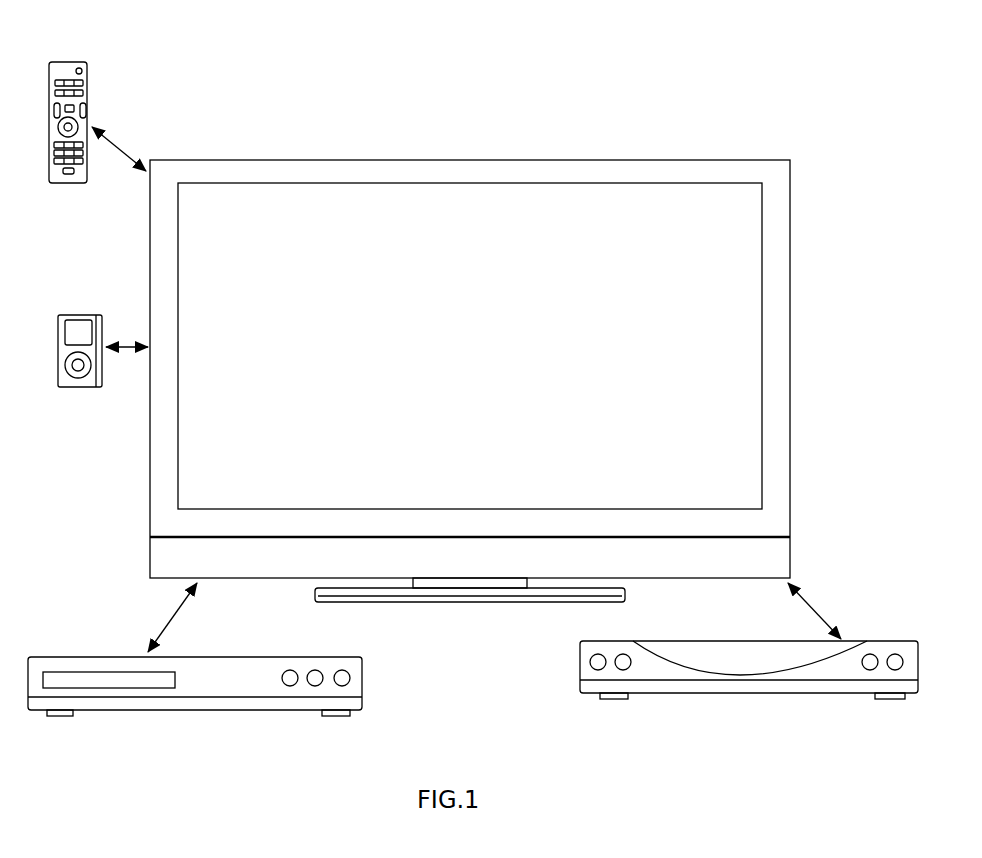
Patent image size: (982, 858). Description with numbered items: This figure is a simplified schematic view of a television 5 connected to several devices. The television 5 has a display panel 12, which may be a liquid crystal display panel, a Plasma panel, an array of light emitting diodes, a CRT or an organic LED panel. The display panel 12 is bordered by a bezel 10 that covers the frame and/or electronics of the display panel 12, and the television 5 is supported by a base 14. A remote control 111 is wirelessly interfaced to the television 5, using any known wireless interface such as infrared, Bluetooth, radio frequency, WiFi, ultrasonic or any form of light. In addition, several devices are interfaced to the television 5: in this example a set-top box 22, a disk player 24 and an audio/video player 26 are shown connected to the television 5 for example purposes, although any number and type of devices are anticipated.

The television 5 is at (882, 280).
The bezel 10 is at (762, 177).
The display panel 12 is at (733, 375).
The base 14 is at (610, 593).
The set-top box 22 is at (898, 641).
The disk player 24 is at (223, 657).
The audio/video player 26 is at (75, 315).
The remote control 111 is at (85, 62).